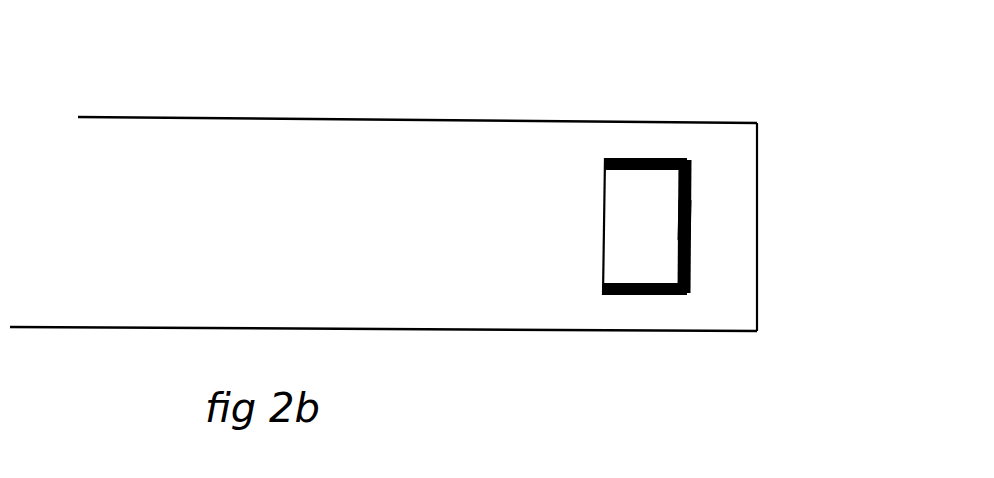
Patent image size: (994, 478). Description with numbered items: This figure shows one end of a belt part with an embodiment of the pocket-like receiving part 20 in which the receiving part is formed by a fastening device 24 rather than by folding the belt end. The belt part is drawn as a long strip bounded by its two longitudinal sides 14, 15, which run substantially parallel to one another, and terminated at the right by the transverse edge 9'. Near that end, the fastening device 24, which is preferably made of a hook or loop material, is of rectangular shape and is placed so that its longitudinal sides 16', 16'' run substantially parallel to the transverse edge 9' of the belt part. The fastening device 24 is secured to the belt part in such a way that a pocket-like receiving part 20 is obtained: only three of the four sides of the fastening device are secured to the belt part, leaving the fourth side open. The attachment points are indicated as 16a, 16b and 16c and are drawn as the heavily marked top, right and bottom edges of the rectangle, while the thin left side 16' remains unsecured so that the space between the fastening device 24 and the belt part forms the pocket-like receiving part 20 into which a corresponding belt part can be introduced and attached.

The longitudinal side 14 is at (388, 120).
The longitudinal side 15 is at (417, 332).
The transverse edge 9' is at (797, 204).
The attachment point 16a is at (645, 158).
The attachment point 16b is at (700, 180).
The attachment point 16c is at (648, 300).
The longitudinal side of fastening device 16' is at (554, 226).
The longitudinal side of fastening device 16'' is at (719, 216).
The pocket-like receiving part 20 is at (625, 222).
The fastening device 24 is at (670, 256).